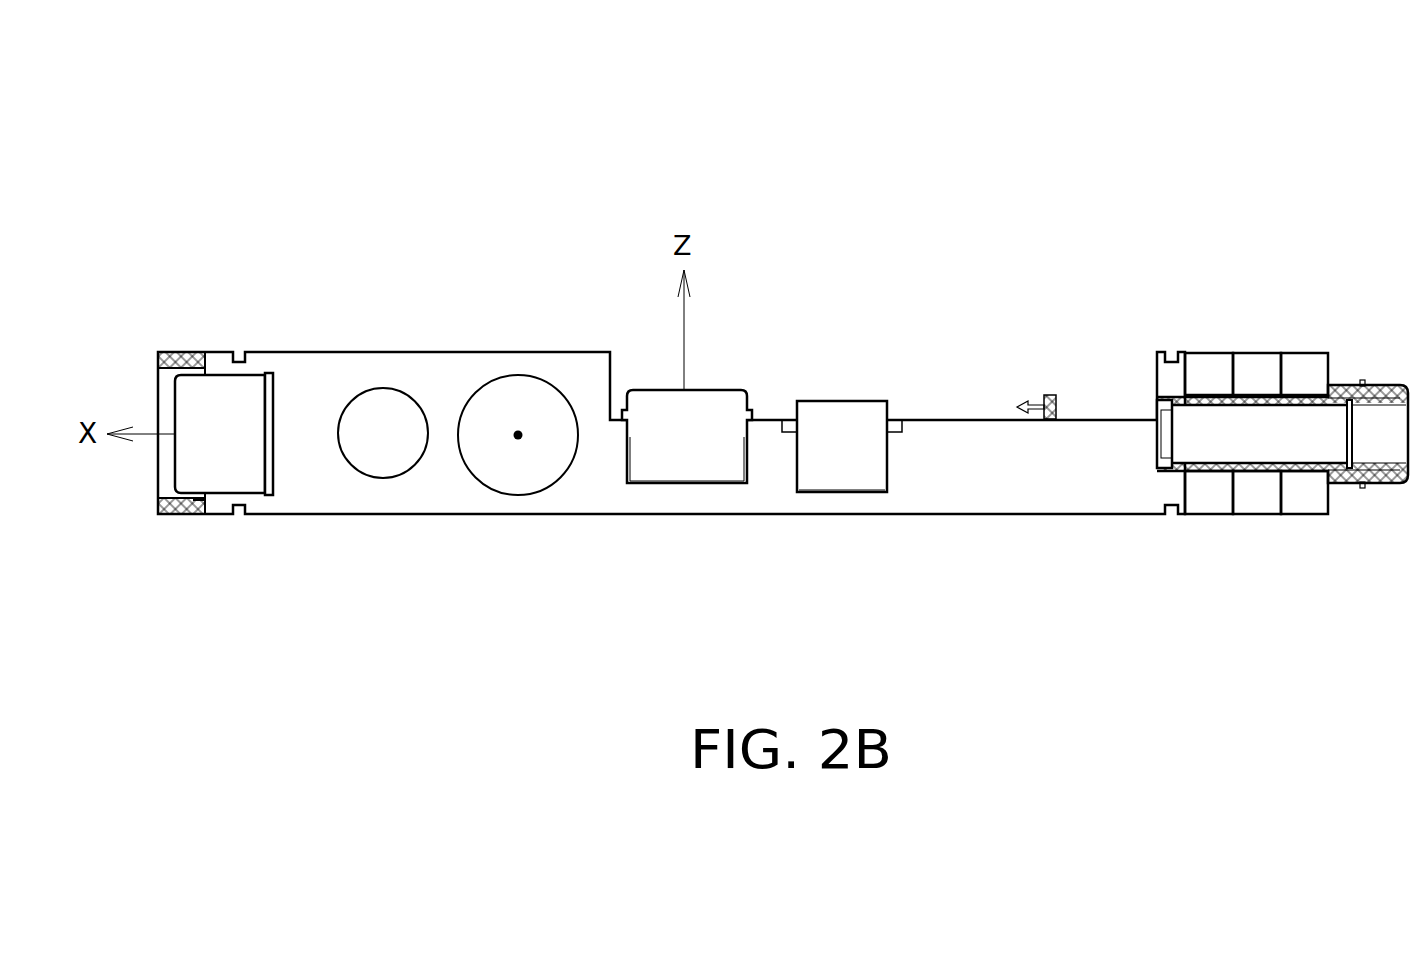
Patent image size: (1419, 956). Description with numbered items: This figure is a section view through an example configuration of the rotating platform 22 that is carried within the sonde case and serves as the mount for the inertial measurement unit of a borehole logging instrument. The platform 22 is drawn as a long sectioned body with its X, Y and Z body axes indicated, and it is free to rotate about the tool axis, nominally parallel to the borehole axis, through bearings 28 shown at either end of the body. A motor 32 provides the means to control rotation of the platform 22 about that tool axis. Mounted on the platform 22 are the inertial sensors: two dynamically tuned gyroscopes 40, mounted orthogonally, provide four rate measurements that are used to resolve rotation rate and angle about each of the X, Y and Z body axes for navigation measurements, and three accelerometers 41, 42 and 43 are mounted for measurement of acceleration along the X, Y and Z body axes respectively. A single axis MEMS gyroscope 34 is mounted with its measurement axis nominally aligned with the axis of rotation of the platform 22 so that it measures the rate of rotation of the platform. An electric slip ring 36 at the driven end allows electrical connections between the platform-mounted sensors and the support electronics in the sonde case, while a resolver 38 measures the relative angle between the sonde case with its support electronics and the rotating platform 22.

The rotating platform 22 is at (1024, 478).
The bearings 28 is at (177, 360).
The motor 32 is at (1258, 366).
The single axis MEMS gyroscope 34 is at (1050, 395).
The electric slip ring 36 is at (1387, 386).
The resolver 38 is at (1213, 503).
The dynamically tuned gyroscopes 40 is at (382, 430).
The accelerometer 41 is at (230, 448).
The accelerometer 42 is at (527, 443).
The accelerometer 43 is at (647, 393).